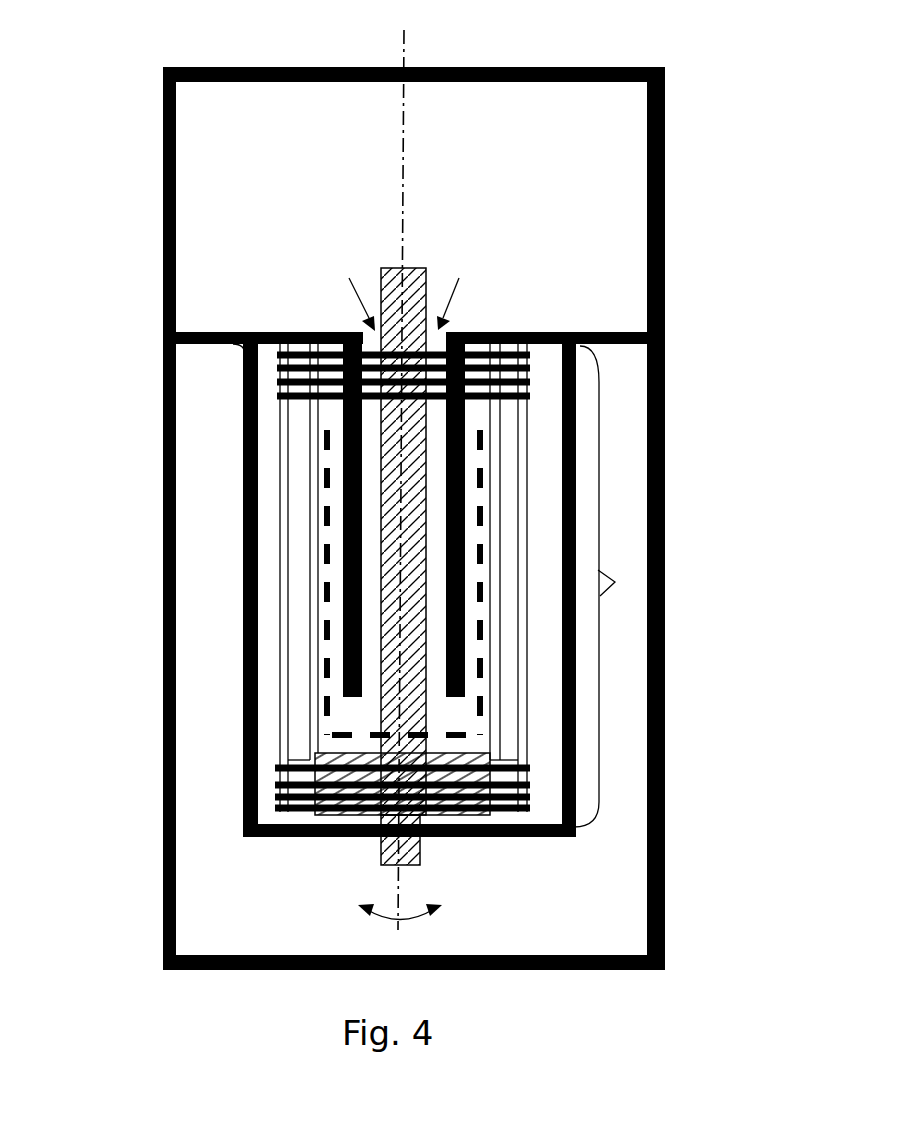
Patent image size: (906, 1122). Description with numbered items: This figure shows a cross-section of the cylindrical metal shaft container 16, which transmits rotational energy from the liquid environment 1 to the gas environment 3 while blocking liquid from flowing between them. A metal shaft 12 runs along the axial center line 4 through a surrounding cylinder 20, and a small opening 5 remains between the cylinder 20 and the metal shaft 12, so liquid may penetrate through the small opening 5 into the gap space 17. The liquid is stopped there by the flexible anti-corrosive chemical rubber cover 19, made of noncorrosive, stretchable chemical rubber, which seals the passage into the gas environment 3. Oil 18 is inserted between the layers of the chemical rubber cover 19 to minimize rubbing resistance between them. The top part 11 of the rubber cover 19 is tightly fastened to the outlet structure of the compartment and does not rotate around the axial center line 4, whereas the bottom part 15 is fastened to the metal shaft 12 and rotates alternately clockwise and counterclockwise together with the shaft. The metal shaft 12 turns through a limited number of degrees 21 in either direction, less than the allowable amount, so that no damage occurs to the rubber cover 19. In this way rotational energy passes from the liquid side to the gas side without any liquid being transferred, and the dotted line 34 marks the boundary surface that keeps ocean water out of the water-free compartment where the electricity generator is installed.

The liquid environment 1 is at (373, 480).
The gas environment 3 is at (617, 391).
The axial center line 4 is at (400, 137).
The small opening 5 is at (350, 718).
The top part 11 is at (302, 422).
The metal shaft 12 is at (340, 630).
The bottom part 15 is at (365, 805).
The cylindrical metal shaft container 16 is at (613, 584).
The gap space 17 is at (455, 727).
The oil 18 is at (512, 563).
The flexible anti-corrosive chemical rubber cover 19 is at (493, 657).
The cylinder 20 is at (462, 687).
The degrees of rotation 21 is at (440, 906).
The dotted line 34 is at (330, 553).